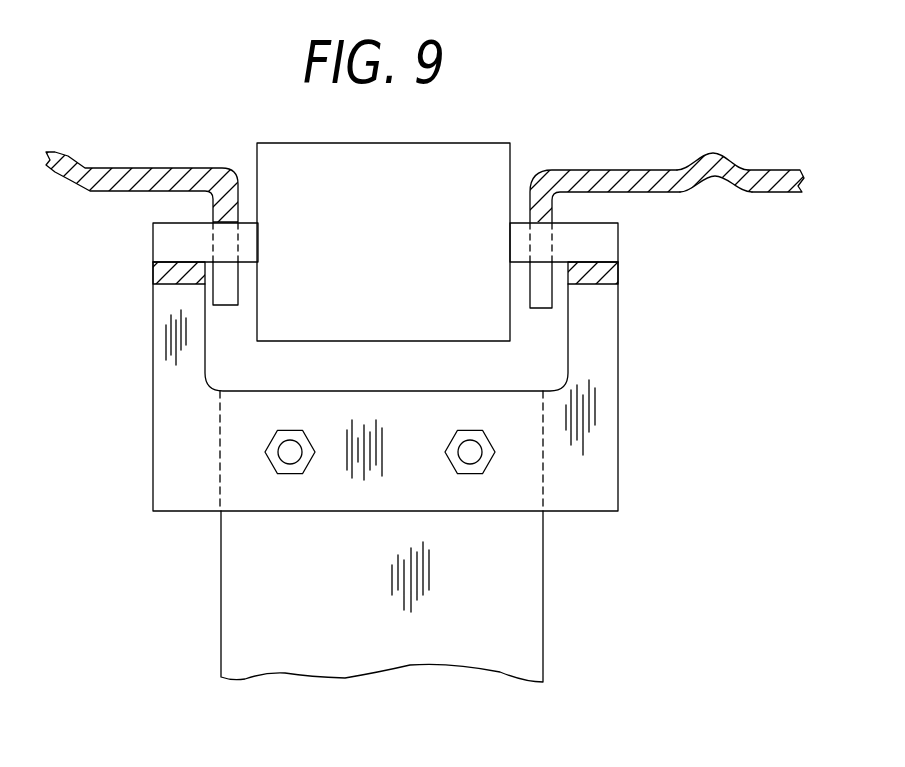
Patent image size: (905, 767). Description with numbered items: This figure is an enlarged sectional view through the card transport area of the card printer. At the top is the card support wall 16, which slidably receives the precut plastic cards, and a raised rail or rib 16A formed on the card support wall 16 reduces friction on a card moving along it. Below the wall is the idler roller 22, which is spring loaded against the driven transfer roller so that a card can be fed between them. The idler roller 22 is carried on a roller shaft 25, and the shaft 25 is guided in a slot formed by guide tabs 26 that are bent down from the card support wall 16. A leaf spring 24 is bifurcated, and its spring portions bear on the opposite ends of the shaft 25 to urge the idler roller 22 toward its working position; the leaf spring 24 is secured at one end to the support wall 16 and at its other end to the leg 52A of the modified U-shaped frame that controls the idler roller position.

The top card support wall 16 is at (785, 170).
The raised rails or ribs 16A is at (717, 153).
The idler roller 22 is at (430, 175).
The leaf spring 24 is at (162, 270).
The roller shaft 25 is at (163, 242).
The guide tabs 26 is at (222, 298).
The leg of frame 52A is at (515, 598).